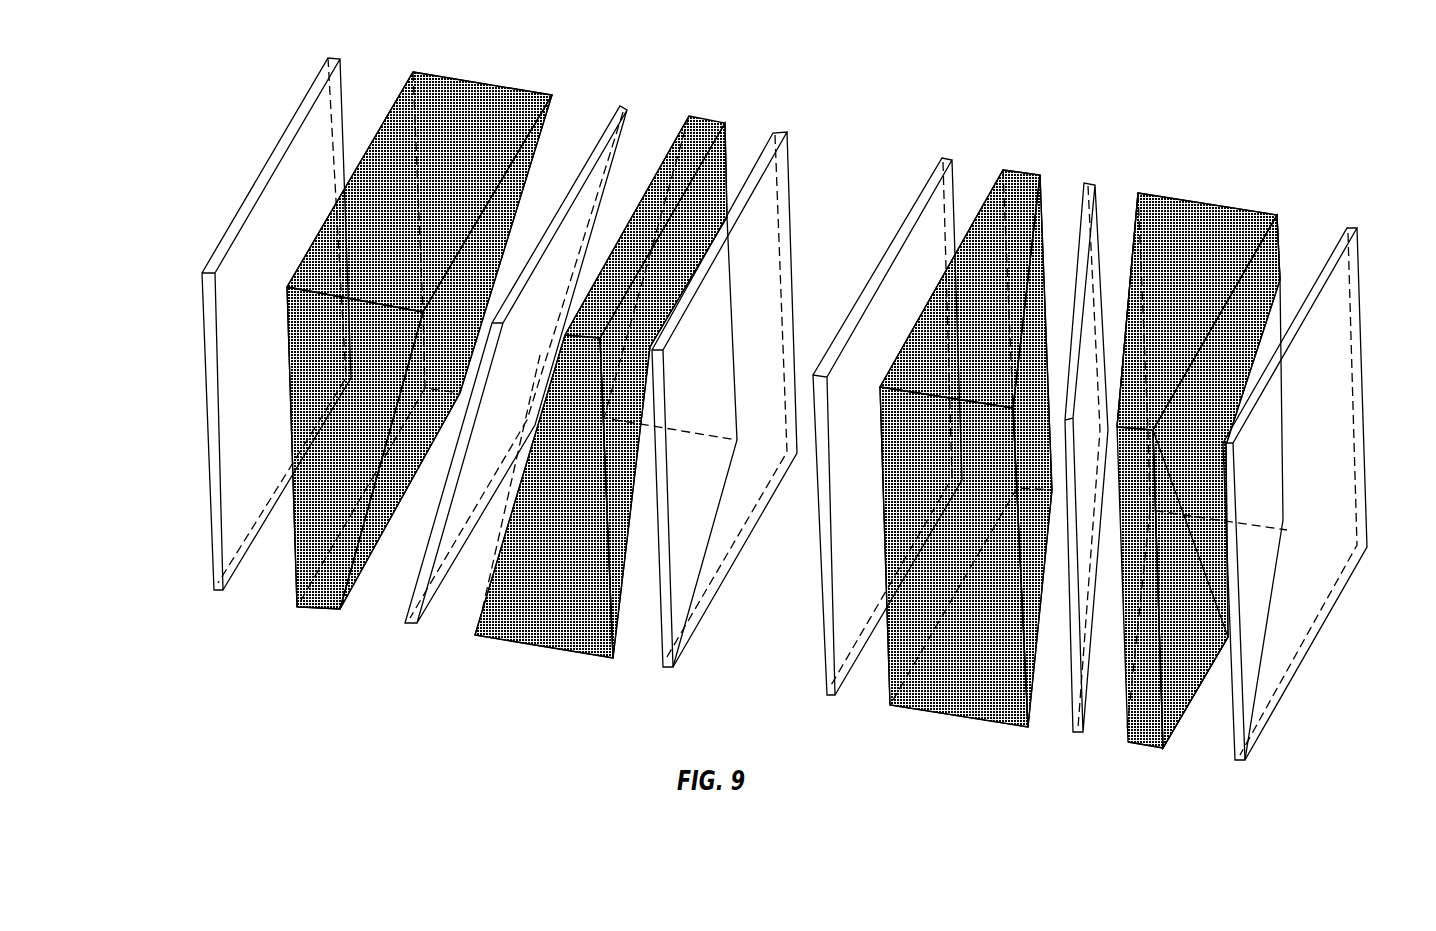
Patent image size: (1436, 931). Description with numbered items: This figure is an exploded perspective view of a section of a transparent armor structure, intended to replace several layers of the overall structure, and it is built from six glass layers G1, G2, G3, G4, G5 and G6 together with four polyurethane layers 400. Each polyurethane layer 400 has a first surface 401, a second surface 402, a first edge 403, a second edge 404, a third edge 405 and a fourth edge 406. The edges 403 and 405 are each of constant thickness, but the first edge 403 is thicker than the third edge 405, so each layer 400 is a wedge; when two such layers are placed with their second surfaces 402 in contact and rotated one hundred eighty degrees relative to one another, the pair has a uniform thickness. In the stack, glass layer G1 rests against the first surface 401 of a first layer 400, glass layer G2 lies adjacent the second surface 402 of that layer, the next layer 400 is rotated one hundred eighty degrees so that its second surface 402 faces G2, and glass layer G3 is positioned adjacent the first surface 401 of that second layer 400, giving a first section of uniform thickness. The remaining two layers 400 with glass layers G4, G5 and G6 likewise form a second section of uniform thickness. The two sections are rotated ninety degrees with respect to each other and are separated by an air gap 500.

The polyurethane layer 400 is at (315, 612).
The first surface 401 is at (713, 172).
The second surface 402 is at (513, 185).
The first edge 403 is at (477, 105).
The second edge 404 is at (307, 543).
The third edge 405 is at (663, 157).
The fourth edge 406 is at (990, 223).
The air gap 500 is at (842, 172).
The glass layer G1 is at (1353, 223).
The glass layer G2 is at (1090, 180).
The glass layer G3 is at (947, 153).
The glass layer G4 is at (670, 670).
The glass layer G5 is at (407, 625).
The glass layer G6 is at (218, 598).